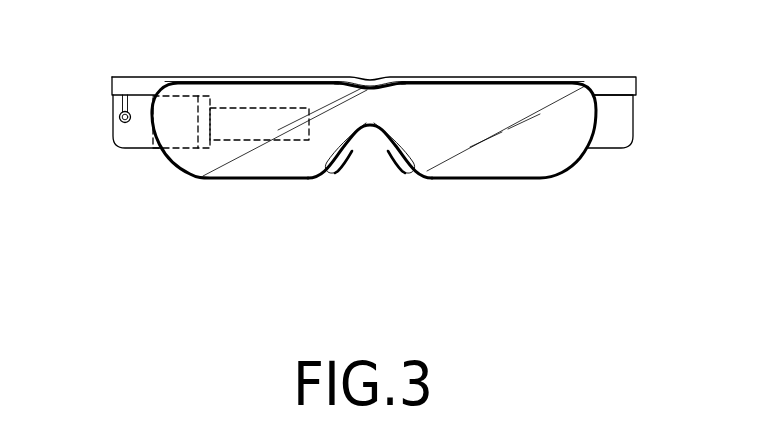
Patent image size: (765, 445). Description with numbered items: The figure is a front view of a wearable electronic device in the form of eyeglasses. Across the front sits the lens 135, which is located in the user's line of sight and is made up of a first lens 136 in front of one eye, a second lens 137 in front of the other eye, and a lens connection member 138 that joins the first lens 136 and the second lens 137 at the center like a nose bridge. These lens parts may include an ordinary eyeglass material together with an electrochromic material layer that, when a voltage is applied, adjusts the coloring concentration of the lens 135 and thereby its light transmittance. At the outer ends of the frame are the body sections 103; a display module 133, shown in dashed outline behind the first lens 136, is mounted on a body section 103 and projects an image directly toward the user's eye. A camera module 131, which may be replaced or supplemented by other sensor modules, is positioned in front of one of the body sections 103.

The body section 103 is at (138, 149).
The camera module 131 is at (120, 117).
The display module 133 is at (233, 146).
The lens 135 is at (374, 190).
The first lens 136 is at (308, 163).
The second lens 137 is at (499, 166).
The lens connection member 138 is at (373, 110).